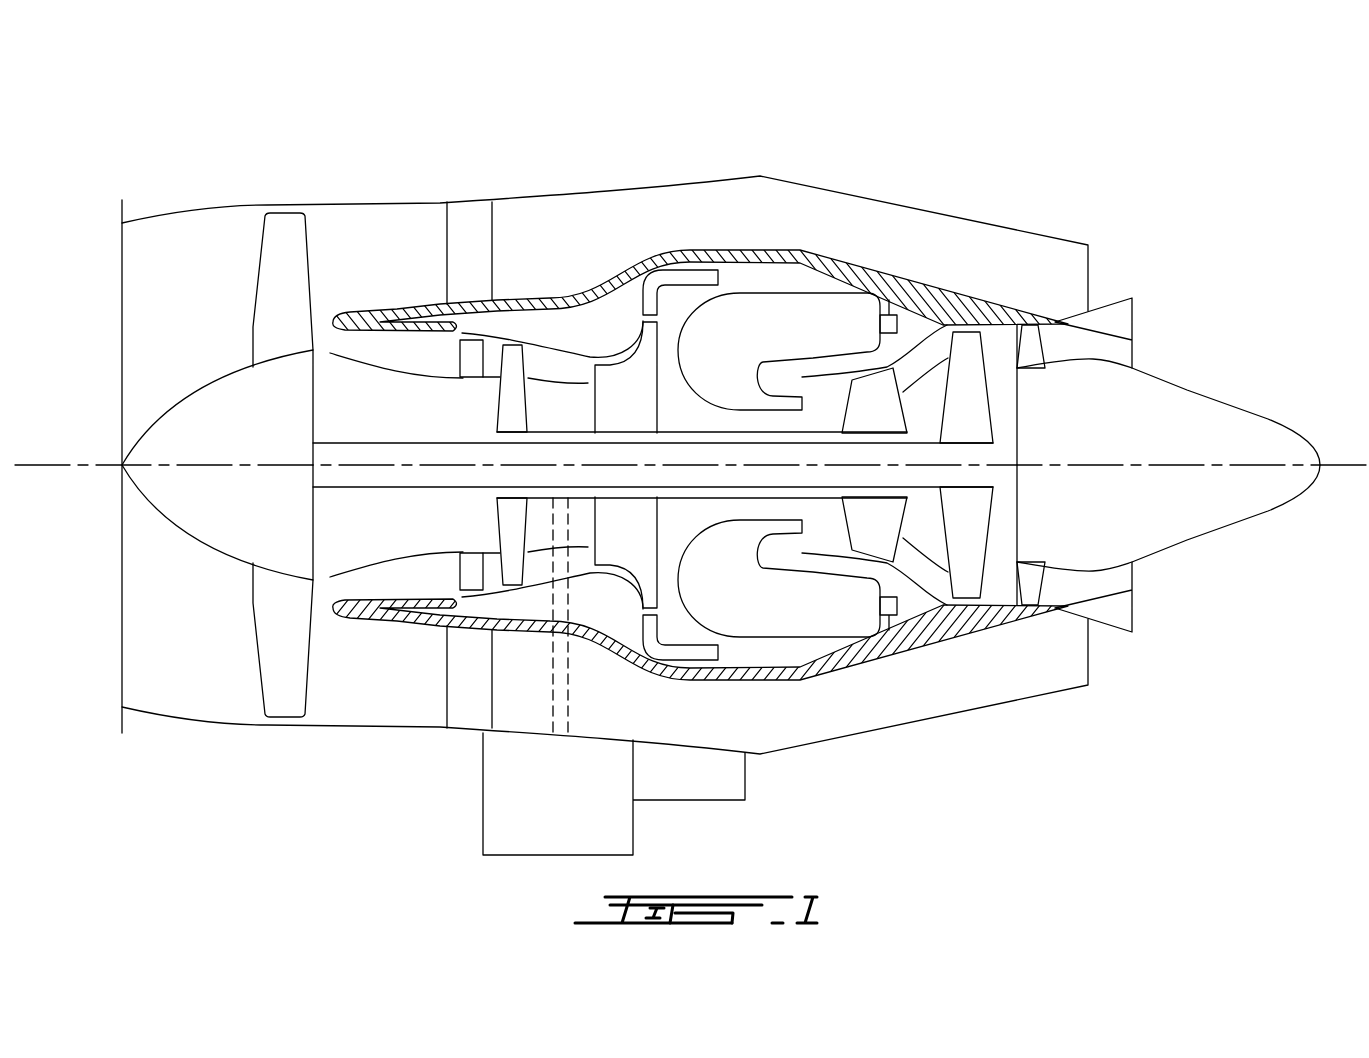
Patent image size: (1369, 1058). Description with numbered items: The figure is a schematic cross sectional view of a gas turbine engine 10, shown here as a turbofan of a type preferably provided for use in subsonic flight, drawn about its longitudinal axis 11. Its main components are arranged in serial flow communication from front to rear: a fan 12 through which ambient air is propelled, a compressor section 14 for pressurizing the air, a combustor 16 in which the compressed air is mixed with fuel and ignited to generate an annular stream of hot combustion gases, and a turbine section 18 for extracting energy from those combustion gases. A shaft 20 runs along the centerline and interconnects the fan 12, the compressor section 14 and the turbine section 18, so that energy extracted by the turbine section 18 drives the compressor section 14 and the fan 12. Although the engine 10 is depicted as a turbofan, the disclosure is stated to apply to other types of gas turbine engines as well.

The gas turbine engine 10 is at (965, 145).
The engine centerline axis 11 is at (1358, 465).
The fan 12 is at (275, 627).
The compressor section 14 is at (548, 358).
The combustor 16 is at (782, 315).
The turbine section 18 is at (920, 537).
The shaft 20 is at (360, 488).